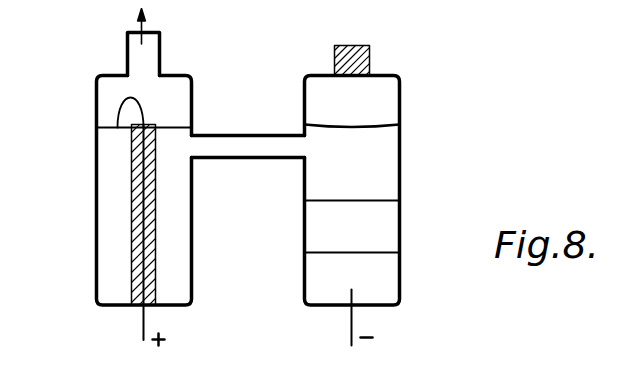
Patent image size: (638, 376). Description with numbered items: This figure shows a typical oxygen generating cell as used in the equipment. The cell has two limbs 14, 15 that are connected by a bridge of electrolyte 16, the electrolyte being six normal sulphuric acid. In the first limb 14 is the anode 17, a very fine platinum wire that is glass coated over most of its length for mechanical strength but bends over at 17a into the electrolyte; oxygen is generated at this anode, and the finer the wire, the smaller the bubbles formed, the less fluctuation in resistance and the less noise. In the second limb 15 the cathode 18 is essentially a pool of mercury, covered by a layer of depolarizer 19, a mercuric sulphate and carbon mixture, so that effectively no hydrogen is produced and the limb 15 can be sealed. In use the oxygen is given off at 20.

The limb 14 is at (88, 190).
The limb 15 is at (392, 155).
The bridge of electrolyte 16 is at (238, 127).
The anode 17 is at (134, 184).
The bend of the anode wire 17a is at (110, 99).
The cathode 18 is at (374, 270).
The layer of depolarizer 19 is at (377, 218).
The oxygen outlet 20 is at (152, 37).